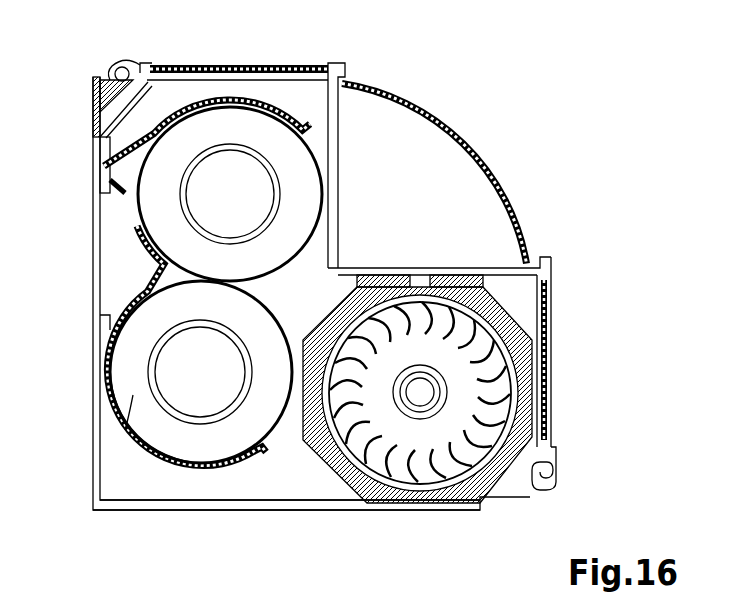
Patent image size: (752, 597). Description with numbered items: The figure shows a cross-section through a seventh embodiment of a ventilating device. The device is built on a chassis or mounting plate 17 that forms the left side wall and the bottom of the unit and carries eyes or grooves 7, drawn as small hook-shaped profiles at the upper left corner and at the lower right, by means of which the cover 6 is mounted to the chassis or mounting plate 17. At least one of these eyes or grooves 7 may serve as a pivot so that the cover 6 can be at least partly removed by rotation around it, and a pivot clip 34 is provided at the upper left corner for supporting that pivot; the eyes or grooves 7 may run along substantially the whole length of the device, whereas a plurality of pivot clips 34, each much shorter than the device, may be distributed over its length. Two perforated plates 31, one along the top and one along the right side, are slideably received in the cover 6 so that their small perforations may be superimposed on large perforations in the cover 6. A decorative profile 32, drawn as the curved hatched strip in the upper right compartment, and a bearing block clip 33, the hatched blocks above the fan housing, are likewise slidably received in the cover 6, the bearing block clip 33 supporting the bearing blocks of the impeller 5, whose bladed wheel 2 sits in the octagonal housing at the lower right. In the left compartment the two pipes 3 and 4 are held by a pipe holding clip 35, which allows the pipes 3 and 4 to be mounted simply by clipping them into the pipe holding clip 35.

The fan impeller 2 is at (477, 383).
The pipe 3 is at (160, 192).
The pipe 4 is at (127, 422).
The impeller 5 is at (364, 503).
The cover 6 is at (335, 173).
The eyes or grooves 7 is at (132, 64).
The chassis or mounting plate 17 is at (230, 507).
The perforated plate 31 is at (230, 67).
The decorative profile 32 is at (460, 143).
The bearing block clip 33 is at (459, 275).
The pivot clip 34 is at (90, 90).
The pipe holding clip 35 is at (150, 283).